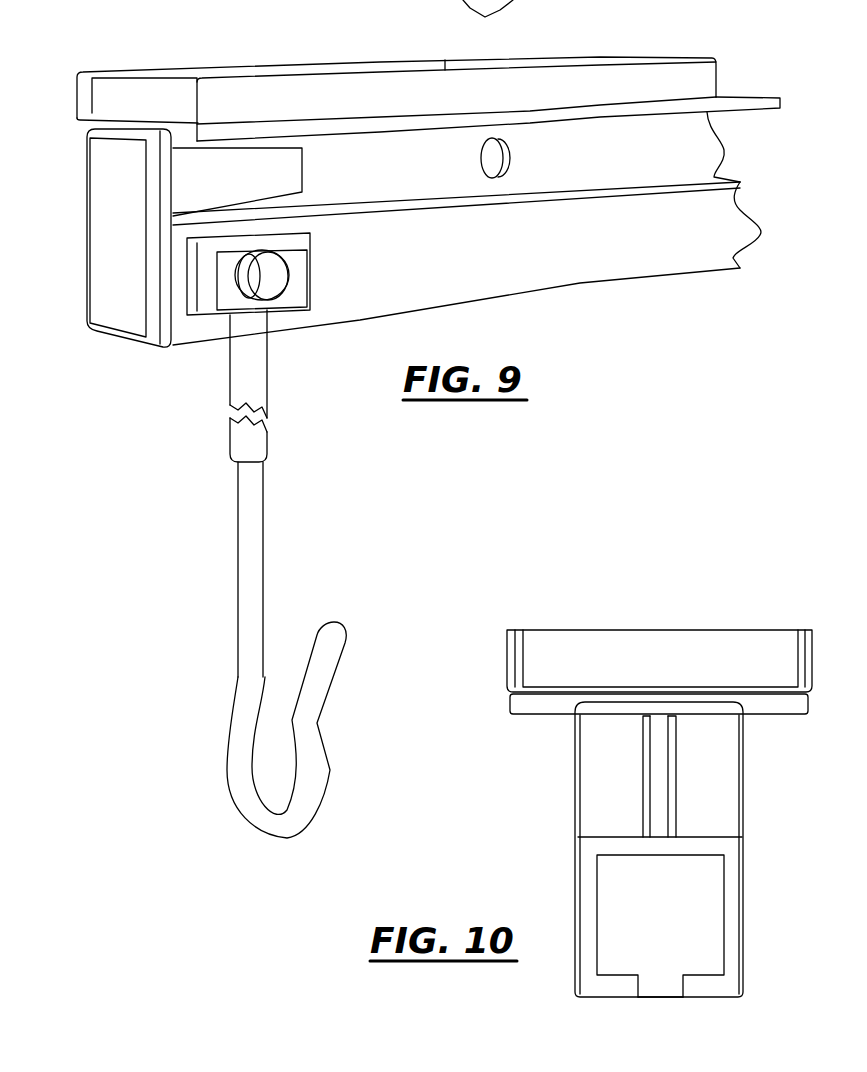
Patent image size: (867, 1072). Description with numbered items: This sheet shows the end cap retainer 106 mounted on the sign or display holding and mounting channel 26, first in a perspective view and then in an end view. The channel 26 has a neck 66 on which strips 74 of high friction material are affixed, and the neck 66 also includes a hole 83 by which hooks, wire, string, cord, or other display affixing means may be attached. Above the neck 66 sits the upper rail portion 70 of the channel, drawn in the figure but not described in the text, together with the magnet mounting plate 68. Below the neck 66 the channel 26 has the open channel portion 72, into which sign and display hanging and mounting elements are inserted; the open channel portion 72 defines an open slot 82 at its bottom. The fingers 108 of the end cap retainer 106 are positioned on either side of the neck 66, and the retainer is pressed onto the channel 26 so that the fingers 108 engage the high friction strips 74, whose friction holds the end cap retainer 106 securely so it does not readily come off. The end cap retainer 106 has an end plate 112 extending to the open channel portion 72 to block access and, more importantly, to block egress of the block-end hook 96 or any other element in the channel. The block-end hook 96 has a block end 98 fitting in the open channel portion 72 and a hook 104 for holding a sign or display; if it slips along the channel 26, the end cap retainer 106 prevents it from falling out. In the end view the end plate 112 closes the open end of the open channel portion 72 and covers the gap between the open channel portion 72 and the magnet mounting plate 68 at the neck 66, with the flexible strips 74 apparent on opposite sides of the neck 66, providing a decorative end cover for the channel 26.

In FIG. 9, the sign or display holding and mounting channel 26 is at (690, 267).
In FIG. 9, the neck 66 is at (603, 167).
In FIG. 10, the neck 66 is at (658, 772).
In FIG. 9, the magnet mounting plate 68 is at (730, 90).
In FIG. 10, the magnet mounting plate 68 is at (807, 700).
In FIG. 9, the top rail 70 is at (247, 63).
In FIG. 10, the top rail 70 is at (812, 655).
In FIG. 9, the open channel portion 72 is at (580, 283).
In FIG. 10, the open channel portion 72 is at (737, 882).
In FIG. 9, the strips of high friction material 74 is at (673, 147).
In FIG. 10, the strips of high friction material 74 is at (648, 730).
In FIG. 10, the open slot 82 is at (660, 997).
In FIG. 9, the hole 83 is at (510, 197).
In FIG. 9, the block-end hook 96 is at (253, 543).
In FIG. 9, the block end 98 is at (298, 305).
In FIG. 9, the hook 104 is at (240, 753).
In FIG. 9, the end cap retainer 106 is at (130, 340).
In FIG. 10, the end cap retainer 106 is at (737, 780).
In FIG. 9, the fingers 108 is at (203, 170).
In FIG. 9, the end plate 112 is at (125, 245).
In FIG. 10, the end plate 112 is at (637, 902).